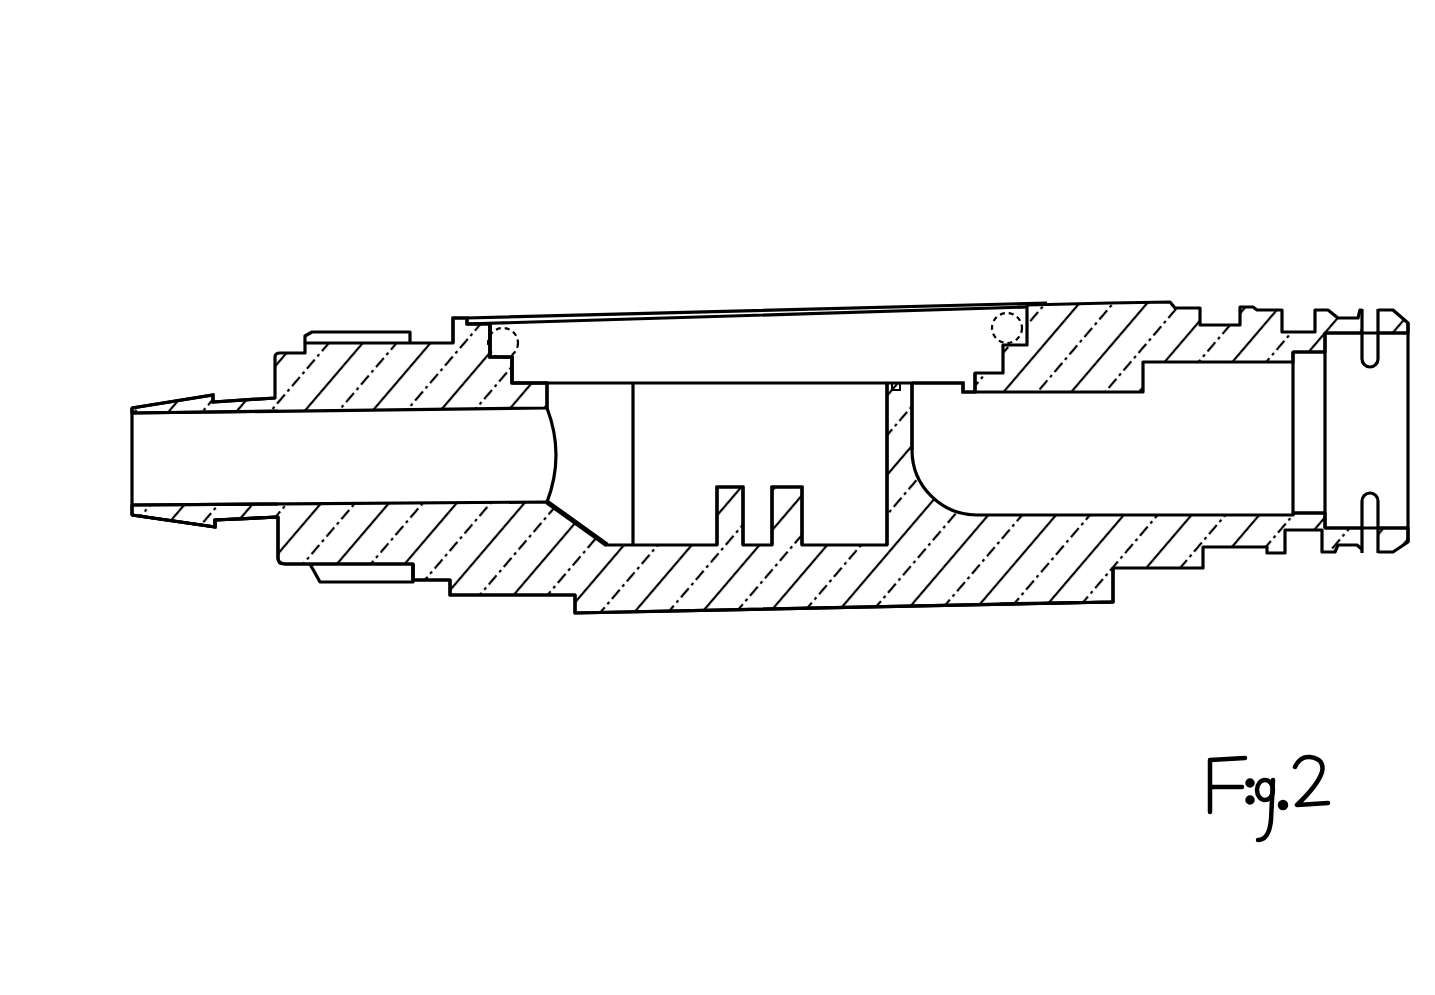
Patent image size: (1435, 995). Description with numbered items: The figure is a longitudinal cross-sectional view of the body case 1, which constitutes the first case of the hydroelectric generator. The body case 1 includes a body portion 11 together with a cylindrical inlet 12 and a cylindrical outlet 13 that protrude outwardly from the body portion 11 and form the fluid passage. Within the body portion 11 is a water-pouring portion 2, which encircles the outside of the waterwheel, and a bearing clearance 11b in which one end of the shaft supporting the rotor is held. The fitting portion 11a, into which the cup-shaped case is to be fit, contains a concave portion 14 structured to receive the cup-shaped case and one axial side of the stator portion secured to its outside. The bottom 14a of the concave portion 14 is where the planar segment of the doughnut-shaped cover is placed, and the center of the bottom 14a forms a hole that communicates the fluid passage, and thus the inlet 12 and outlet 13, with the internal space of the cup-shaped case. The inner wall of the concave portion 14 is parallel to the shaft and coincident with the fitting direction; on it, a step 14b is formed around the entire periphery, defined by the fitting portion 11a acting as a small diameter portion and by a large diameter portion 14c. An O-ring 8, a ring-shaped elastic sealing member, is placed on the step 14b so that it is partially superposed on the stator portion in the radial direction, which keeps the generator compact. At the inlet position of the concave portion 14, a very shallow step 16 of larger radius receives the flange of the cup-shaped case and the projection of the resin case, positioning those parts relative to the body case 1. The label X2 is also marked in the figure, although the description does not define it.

The body case 1 is at (490, 553).
The water-pouring portion 2 is at (903, 440).
The O-ring 8 is at (497, 313).
The body portion 11 is at (763, 583).
The fitting portion 11a is at (512, 370).
The bearing clearance 11b is at (727, 512).
The cylindrical inlet 12 is at (1290, 305).
The cylindrical outlet 13 is at (257, 438).
The concave portion 14 is at (843, 380).
The bottom of the concave portion 14a is at (977, 373).
The step 14b is at (1003, 322).
The large diameter portion 14c is at (490, 336).
The shallow step 16 is at (1027, 307).
The section indication X2 is at (1002, 607).